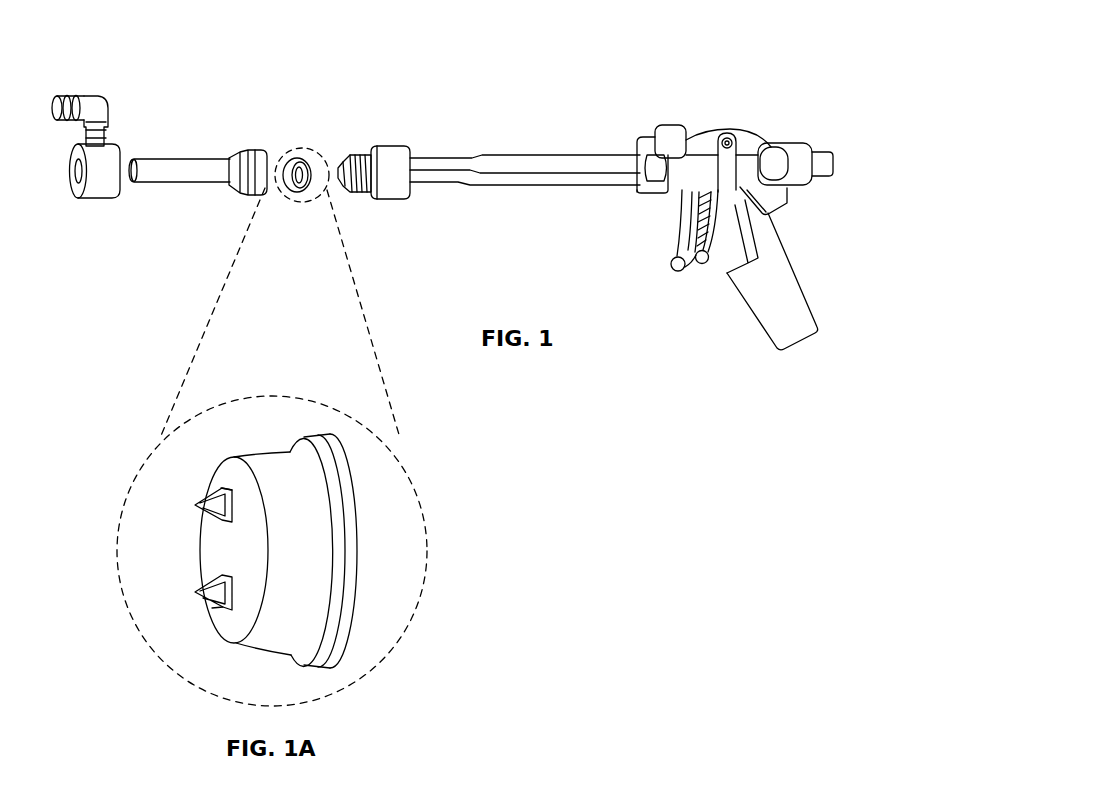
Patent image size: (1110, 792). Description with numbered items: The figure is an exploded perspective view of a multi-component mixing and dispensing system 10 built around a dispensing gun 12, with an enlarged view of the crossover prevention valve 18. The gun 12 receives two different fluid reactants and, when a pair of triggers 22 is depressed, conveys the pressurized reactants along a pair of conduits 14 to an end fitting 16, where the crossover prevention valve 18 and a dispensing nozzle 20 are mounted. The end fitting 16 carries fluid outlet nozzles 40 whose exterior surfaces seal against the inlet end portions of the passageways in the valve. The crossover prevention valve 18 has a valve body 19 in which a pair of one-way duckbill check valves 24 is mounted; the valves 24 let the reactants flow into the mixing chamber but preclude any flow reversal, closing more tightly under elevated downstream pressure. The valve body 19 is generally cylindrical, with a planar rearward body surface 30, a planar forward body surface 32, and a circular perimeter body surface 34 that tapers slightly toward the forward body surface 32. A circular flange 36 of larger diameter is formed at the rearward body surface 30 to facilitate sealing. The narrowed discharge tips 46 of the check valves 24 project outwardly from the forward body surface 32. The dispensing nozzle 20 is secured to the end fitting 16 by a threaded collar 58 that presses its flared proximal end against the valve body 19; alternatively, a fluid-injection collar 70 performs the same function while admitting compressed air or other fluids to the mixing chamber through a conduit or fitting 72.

In FIG. 1, the mixing and dispensing system 10 is at (660, 70).
In FIG. 1, the dispensing gun 12 is at (753, 142).
In FIG. 1, the conduits 14 is at (555, 170).
In FIG. 1, the end fitting 16 is at (392, 150).
In FIG. 1, the crossover prevention valve 18 is at (292, 200).
In FIG. 1A, the valve body 19 is at (423, 478).
In FIG. 1, the dispensing nozzle 20 is at (180, 186).
In FIG. 1, the triggers 22 is at (680, 272).
In FIG. 1A, the one-way check valves 24 is at (221, 488).
In FIG. 1A, the rearward body surface 30 is at (364, 552).
In FIG. 1A, the forward body surface 32 is at (224, 550).
In FIG. 1A, the perimeter body surface 34 is at (278, 484).
In FIG. 1A, the circular flange 36 is at (298, 661).
In FIG. 1, the fluid outlet nozzles 40 is at (341, 156).
In FIG. 1A, the discharge tips 46 is at (204, 504).
In FIG. 1, the threaded collar 58 is at (242, 196).
In FIG. 1, the fluid-injection collar 70 is at (92, 200).
In FIG. 1, the conduit or fitting 72 is at (95, 100).